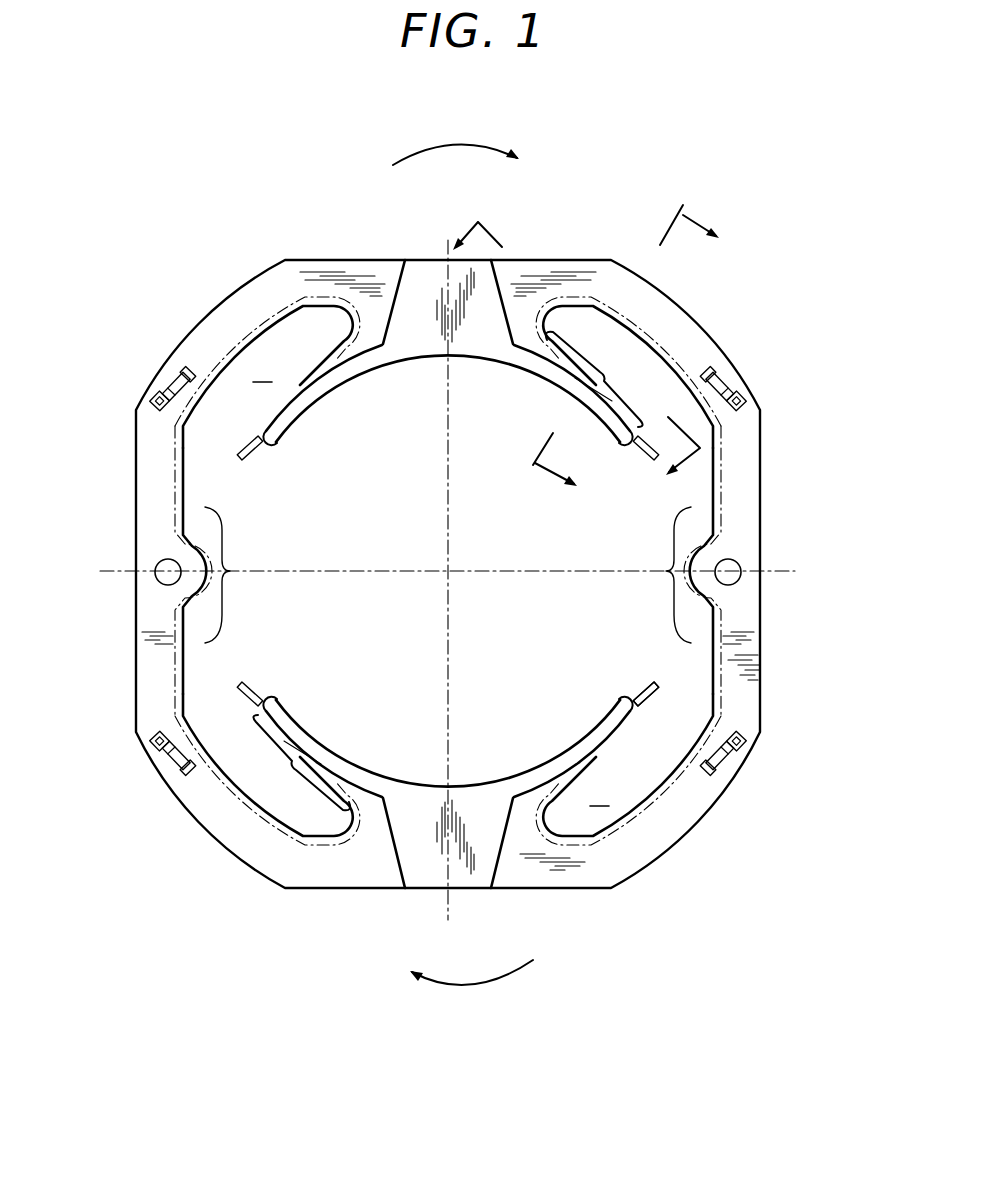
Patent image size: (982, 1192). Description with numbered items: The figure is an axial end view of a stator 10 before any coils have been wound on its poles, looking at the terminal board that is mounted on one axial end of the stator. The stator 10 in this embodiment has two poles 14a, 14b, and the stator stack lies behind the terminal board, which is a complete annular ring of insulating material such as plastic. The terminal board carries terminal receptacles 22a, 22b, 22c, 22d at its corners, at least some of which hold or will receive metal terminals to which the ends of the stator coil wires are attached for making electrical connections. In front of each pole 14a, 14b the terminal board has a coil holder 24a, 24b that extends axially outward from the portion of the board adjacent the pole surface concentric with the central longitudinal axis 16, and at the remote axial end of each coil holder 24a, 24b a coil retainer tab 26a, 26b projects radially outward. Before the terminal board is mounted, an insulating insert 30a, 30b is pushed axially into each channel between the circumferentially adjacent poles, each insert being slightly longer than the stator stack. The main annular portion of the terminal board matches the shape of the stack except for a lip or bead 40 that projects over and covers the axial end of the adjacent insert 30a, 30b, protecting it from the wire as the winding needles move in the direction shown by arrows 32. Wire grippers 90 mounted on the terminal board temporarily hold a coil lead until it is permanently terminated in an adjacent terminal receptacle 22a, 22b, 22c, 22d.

The stator 10 is at (690, 854).
The pole 14a is at (325, 392).
The pole 14b is at (325, 742).
The central longitudinal axis 16 is at (453, 574).
The terminal receptacle 22a is at (742, 383).
The terminal receptacle 22b is at (166, 384).
The terminal receptacle 22c is at (165, 750).
The terminal receptacle 22d is at (738, 753).
The coil holder 24a is at (490, 366).
The coil holder 24b is at (537, 764).
The coil retainer tab 26a is at (405, 300).
The coil retainer tab 26b is at (428, 870).
The insert 30a is at (703, 733).
The insert 30b is at (254, 698).
The arrows 32 is at (458, 140).
The lip or bead 40 is at (284, 404).
The wire gripper 90 is at (185, 364).